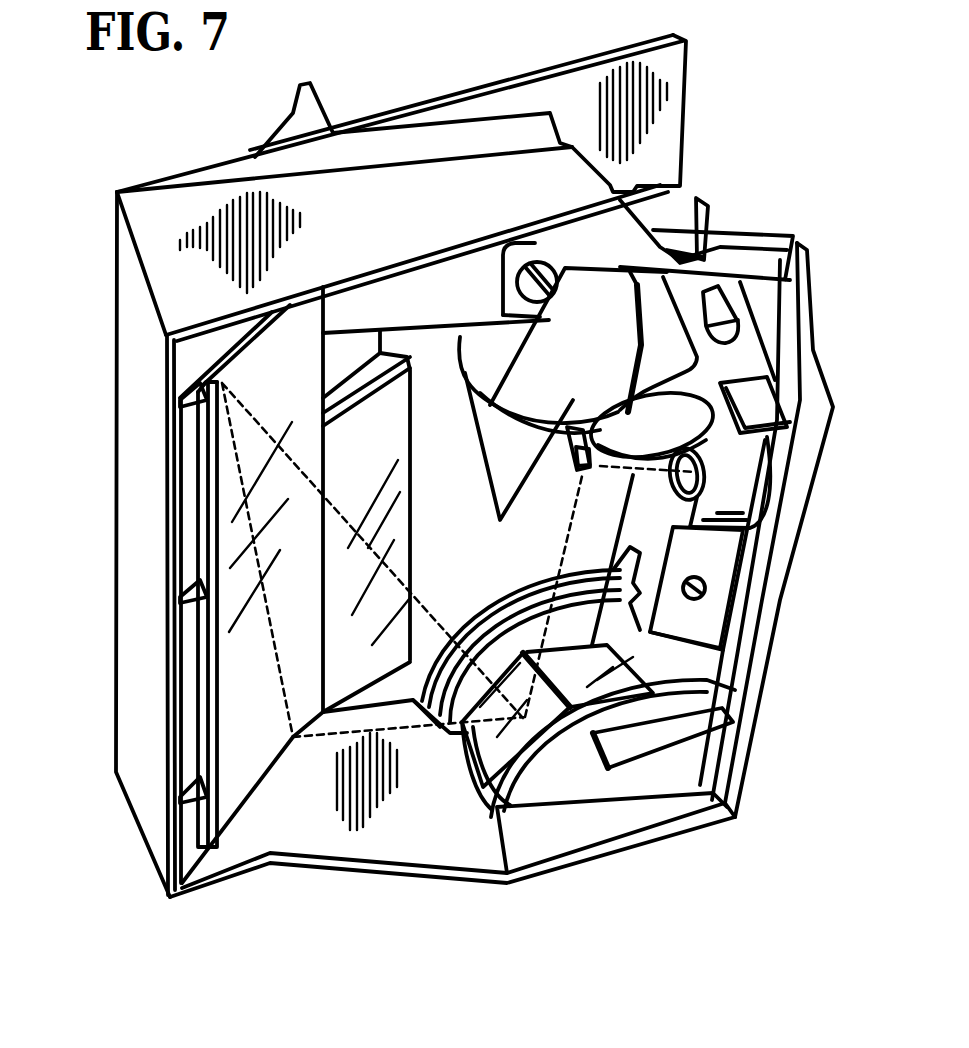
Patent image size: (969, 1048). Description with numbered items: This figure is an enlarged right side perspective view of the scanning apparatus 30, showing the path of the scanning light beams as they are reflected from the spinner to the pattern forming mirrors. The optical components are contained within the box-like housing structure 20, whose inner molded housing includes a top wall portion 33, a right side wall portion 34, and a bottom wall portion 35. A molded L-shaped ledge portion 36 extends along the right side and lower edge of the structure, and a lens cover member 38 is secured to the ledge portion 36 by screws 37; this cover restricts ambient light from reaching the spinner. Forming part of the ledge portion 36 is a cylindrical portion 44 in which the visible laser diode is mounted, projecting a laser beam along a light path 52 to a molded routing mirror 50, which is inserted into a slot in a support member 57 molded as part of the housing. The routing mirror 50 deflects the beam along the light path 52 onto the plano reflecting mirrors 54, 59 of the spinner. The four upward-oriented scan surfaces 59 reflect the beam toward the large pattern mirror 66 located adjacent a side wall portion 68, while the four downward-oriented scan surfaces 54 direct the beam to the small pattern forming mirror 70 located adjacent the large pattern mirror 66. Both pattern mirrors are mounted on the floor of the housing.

The housing structure 20 is at (452, 103).
The scanning apparatus 30 is at (395, 885).
The top wall portion 33 is at (165, 215).
The right side wall portion 34 is at (757, 697).
The bottom wall portion 35 is at (313, 870).
The ledge portion 36 is at (340, 300).
The screws 37 is at (503, 280).
The lens cover member 38 is at (478, 442).
The cylindrical portion 44 is at (750, 485).
The routing mirror 50 is at (582, 472).
The light path 52 is at (567, 535).
The plano reflecting mirrors 54 is at (607, 730).
The support member 57 is at (580, 422).
The plano reflecting mirrors 59 is at (473, 733).
The large pattern mirror 66 is at (227, 497).
The side wall portion 68 is at (130, 670).
The small pattern forming mirror 70 is at (405, 550).